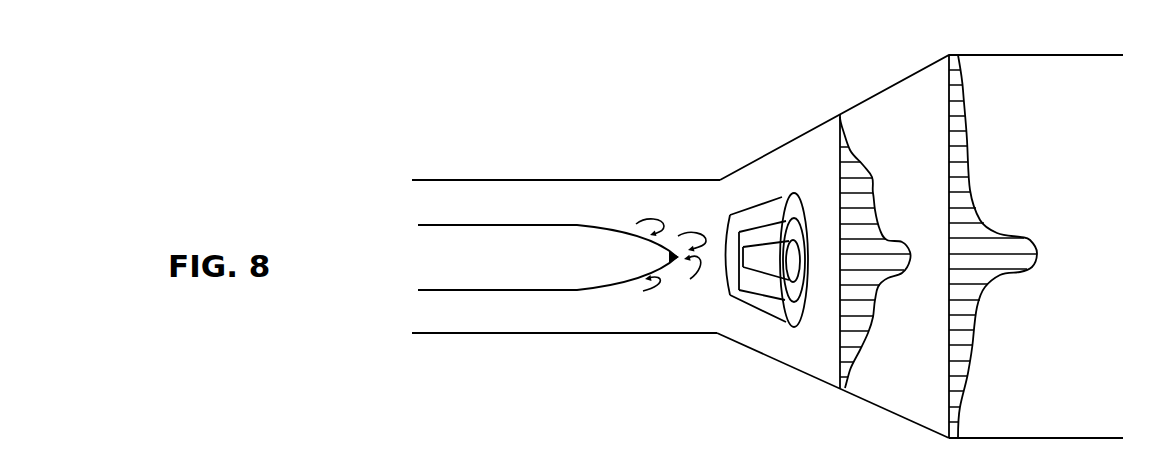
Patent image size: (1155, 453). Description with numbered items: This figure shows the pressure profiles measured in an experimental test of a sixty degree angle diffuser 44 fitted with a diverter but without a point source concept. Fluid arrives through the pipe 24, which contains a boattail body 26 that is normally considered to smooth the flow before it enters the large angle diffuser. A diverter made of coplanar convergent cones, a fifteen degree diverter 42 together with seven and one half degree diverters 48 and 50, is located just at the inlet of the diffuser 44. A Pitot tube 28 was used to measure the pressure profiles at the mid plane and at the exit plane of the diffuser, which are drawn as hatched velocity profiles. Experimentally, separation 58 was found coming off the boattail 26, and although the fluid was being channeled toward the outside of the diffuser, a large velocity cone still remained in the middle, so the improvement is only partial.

The pipe 24 is at (553, 332).
The boattail 26 is at (465, 290).
The Pitot tube 28 is at (877, 95).
The 15 degree diverter 42 is at (779, 218).
The 60 degree angle diffuser 44 is at (790, 368).
The 7.5 degree diverter 48 is at (752, 229).
The 7.5 degree diverter 50 is at (730, 215).
The separation 58 is at (672, 283).